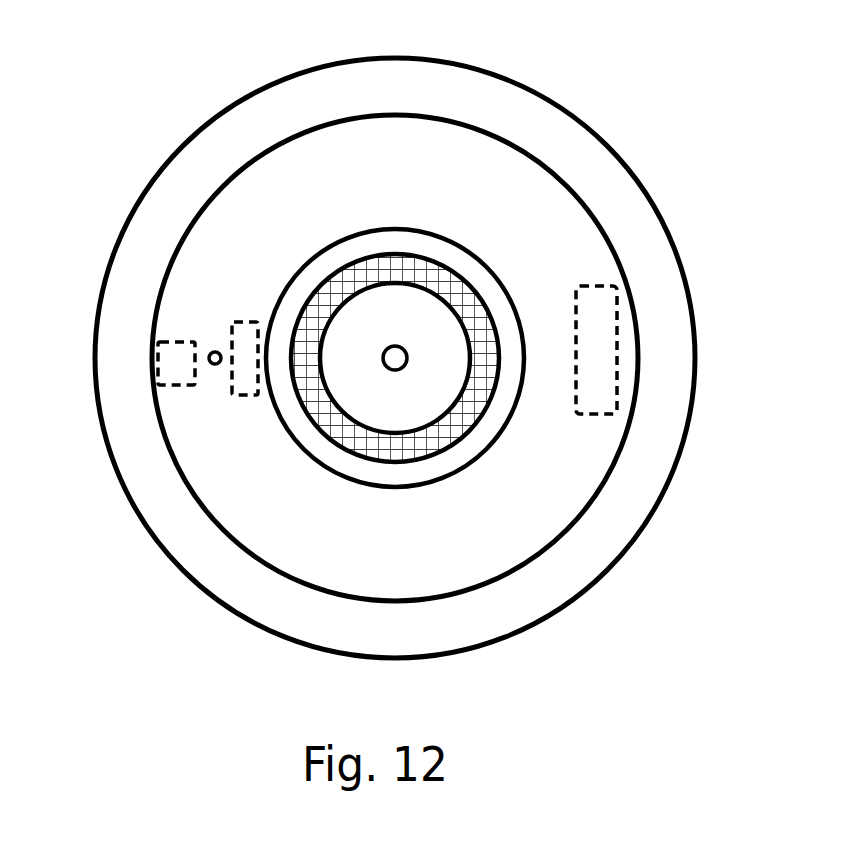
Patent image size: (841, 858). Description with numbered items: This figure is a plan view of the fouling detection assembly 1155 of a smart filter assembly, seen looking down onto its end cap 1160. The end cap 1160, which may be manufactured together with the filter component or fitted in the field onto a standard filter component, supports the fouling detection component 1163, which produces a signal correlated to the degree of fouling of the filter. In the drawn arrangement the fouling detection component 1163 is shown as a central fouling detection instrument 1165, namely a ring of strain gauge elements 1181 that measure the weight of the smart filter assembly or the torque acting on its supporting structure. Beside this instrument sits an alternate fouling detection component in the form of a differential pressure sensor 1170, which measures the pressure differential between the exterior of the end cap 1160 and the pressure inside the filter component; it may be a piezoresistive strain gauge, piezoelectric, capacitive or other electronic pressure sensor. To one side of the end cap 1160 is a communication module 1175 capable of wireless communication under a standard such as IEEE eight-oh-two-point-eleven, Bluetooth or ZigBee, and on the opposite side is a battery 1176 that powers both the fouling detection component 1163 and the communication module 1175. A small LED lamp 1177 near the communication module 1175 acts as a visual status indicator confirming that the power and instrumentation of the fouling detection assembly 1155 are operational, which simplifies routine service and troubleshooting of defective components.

The fouling detection assembly 1155 is at (438, 23).
The end cap 1160 is at (322, 66).
The fouling detection component 1163 is at (253, 408).
The fouling detection instrument 1165 is at (398, 240).
The differential pressure sensor 1170 is at (245, 322).
The communication module 1175 is at (176, 341).
The battery 1176 is at (617, 296).
The LED lamp 1177 is at (216, 366).
The strain gauge elements 1181 is at (450, 437).